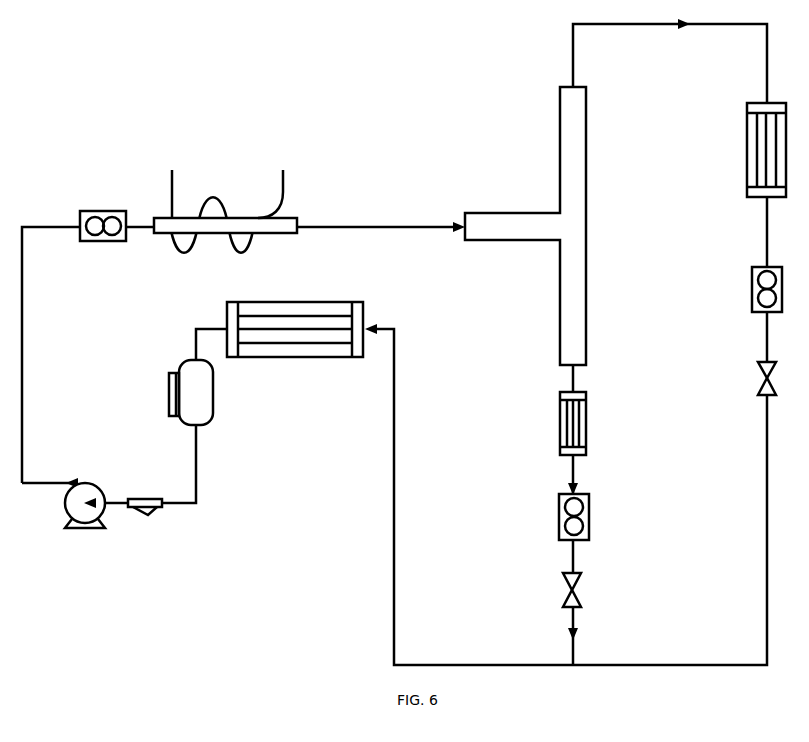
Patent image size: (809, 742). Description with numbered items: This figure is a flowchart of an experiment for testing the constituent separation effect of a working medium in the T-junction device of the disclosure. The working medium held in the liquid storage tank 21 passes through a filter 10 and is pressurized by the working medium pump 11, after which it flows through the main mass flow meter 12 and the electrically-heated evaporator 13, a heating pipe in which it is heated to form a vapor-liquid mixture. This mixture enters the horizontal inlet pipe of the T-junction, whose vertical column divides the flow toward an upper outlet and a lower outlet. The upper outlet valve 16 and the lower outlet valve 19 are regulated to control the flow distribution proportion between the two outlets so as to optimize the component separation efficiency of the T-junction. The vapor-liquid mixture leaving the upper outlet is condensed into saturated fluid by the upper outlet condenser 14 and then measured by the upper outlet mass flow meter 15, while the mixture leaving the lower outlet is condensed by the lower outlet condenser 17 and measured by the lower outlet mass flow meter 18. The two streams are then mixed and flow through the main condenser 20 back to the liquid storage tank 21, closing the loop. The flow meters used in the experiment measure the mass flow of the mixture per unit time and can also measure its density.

The filter 10 is at (183, 547).
The working medium pump 11 is at (109, 546).
The main mass flow meter 12 is at (110, 190).
The electrically-heated evaporator 13 is at (225, 199).
The upper outlet condenser 14 is at (729, 150).
The upper outlet mass flow meter 15 is at (728, 263).
The upper outlet valve 16 is at (727, 347).
The lower outlet condenser 17 is at (618, 405).
The lower outlet mass flow meter 18 is at (619, 495).
The lower outlet valve 19 is at (613, 572).
The main condenser 20 is at (299, 363).
The liquid storage tank 21 is at (229, 418).